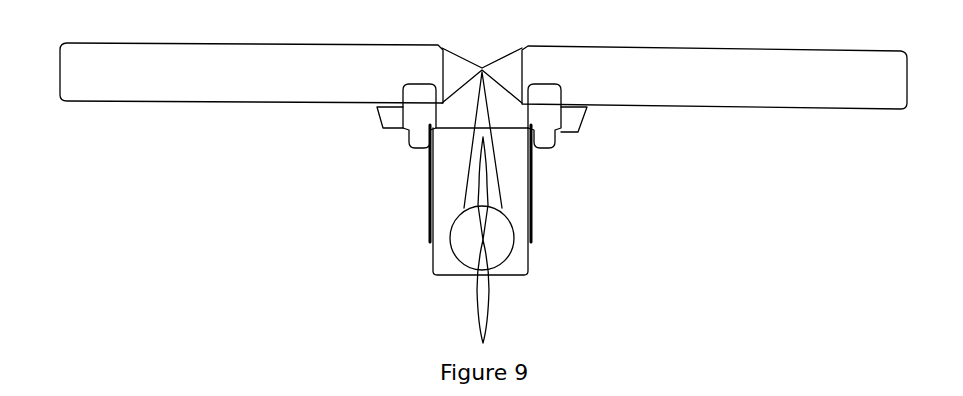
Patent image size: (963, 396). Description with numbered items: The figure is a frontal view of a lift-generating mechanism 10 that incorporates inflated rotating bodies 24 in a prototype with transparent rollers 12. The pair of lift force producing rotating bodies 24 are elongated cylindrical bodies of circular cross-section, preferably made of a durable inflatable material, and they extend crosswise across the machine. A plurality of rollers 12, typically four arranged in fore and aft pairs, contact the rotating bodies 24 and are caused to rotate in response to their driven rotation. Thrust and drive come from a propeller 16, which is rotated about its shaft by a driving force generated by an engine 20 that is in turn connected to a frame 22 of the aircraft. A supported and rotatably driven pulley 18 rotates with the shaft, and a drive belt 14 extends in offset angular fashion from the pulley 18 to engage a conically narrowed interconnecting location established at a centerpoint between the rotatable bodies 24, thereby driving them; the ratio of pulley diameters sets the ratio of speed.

The aircraft 10 is at (455, 50).
The rollers 12 is at (382, 118).
The drive belt 14 is at (468, 179).
The propeller 16 is at (476, 308).
The pulley 18 is at (455, 257).
The engine 20 is at (429, 248).
The frame 22 is at (381, 117).
The rotating bodies 24 is at (137, 105).